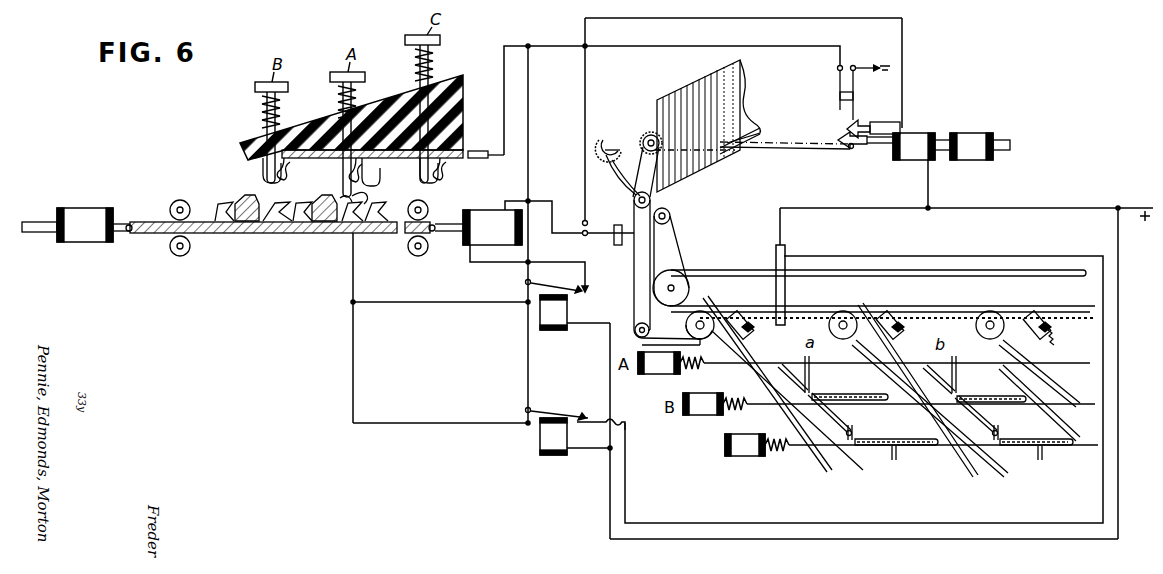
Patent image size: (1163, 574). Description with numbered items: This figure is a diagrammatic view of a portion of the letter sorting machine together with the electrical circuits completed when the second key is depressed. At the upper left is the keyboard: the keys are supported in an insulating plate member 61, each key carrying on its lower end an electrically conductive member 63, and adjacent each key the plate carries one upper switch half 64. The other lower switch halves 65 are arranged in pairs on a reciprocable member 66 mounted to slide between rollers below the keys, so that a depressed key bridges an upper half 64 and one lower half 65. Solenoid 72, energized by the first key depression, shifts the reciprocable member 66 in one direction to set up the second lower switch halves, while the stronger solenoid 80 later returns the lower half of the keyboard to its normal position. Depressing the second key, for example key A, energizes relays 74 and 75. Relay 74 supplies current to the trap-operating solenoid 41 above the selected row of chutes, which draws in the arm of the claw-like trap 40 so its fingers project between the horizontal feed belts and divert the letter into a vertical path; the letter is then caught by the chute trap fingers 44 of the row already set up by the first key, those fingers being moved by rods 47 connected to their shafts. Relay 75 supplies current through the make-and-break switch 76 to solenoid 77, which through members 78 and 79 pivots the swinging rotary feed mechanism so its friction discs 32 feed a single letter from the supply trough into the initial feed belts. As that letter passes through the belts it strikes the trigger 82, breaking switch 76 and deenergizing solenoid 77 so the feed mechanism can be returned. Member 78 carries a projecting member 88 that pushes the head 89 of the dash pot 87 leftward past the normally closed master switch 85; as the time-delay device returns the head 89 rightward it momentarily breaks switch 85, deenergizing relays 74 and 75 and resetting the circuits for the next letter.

The solenoid 72 is at (67, 225).
The reciprocable member 66 is at (274, 234).
The plate member 61 is at (324, 116).
The electrically conductive member 63 is at (359, 170).
The upper switch half 64 is at (380, 166).
The lower switch half 65 is at (370, 195).
The solenoid 80 is at (492, 227).
The relay 75 is at (554, 305).
The relay 74 is at (557, 432).
The make-and-break switch 76 is at (616, 225).
The friction discs 32 is at (646, 132).
The trigger 82 is at (658, 233).
The claw-like trap 40 is at (703, 304).
The solenoid 41 is at (754, 328).
The fingers 44 is at (822, 432).
The rods 47 is at (858, 401).
The member 79 is at (778, 150).
The member 78 is at (870, 150).
The make-and-break switch 85 is at (840, 80).
The dash pot 87 is at (885, 122).
The member 88 is at (843, 139).
The head 89 is at (848, 126).
The solenoid 77 is at (951, 146).